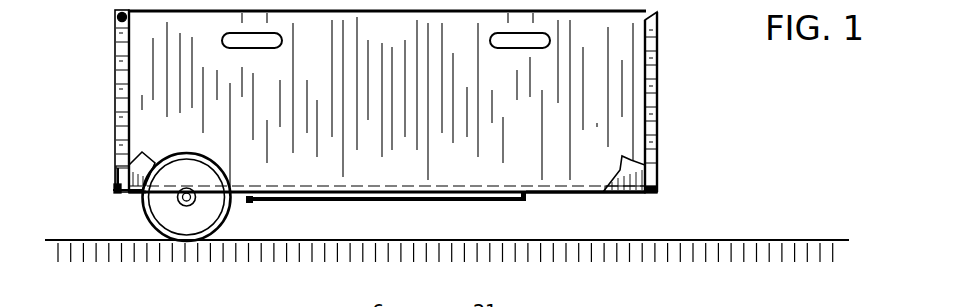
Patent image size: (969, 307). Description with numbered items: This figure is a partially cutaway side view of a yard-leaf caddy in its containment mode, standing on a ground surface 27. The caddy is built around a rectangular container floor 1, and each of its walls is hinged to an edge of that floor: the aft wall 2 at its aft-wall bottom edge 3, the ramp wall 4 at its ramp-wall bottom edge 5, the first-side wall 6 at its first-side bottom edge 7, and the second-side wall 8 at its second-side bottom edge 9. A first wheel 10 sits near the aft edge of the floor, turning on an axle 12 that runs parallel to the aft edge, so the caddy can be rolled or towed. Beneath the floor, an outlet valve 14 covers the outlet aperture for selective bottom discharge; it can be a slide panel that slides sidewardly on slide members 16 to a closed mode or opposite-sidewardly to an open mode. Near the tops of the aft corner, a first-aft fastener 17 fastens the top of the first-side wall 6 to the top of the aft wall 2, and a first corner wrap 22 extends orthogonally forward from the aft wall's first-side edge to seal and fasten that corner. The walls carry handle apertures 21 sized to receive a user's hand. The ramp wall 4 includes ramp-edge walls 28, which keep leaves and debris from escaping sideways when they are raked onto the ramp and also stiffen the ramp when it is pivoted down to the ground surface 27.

The container floor 1 is at (133, 194).
The aft wall 2 is at (118, 63).
The aft-wall bottom edge 3 is at (115, 189).
The ramp wall 4 is at (659, 51).
The ramp-wall bottom edge 5 is at (657, 192).
The first-side wall 6 is at (405, 140).
The first-side bottom edge 7 is at (553, 183).
The second-side wall 8 is at (136, 168).
The second-side bottom edge 9 is at (140, 188).
The first wheel 10 is at (172, 240).
The axle 12 is at (188, 201).
The outlet valve 14 is at (340, 202).
The slide members 16 is at (247, 204).
The first-aft fastener 17 is at (117, 17).
The handle aperture 21 is at (520, 40).
The first corner wrap 22 is at (123, 85).
The ground surface 27 is at (832, 240).
The ramp-edge walls 28 is at (647, 98).